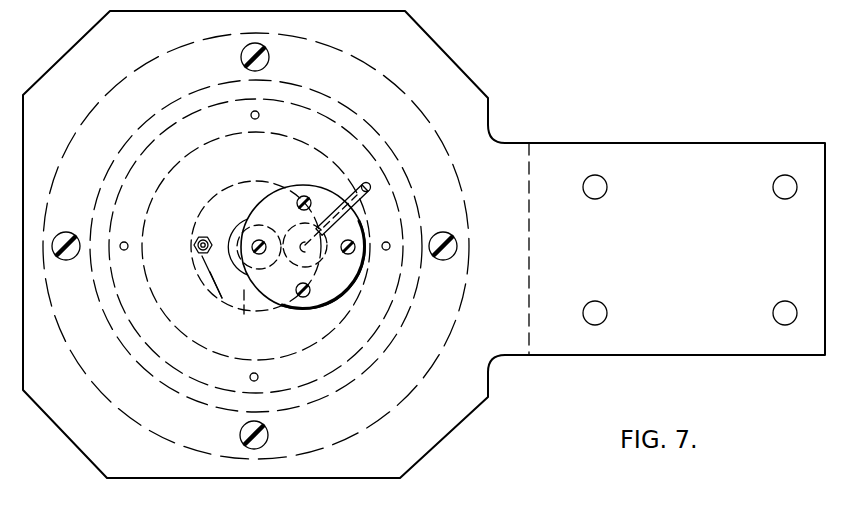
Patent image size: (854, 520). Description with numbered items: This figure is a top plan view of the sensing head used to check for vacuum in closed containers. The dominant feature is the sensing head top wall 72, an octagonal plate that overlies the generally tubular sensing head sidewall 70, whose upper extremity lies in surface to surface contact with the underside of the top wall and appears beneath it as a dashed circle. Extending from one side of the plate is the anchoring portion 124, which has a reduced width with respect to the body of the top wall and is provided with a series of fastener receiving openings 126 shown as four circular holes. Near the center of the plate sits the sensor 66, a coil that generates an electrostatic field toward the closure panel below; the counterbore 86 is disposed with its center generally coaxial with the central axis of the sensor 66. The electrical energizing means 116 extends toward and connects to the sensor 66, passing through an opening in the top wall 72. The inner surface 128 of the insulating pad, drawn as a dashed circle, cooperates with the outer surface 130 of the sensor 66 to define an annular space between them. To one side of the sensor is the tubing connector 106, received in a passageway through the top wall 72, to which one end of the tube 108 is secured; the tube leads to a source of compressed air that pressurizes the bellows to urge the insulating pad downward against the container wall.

The sensor 66 is at (245, 224).
The sensing head sidewall 70 is at (368, 67).
The sensing head top wall 72 is at (464, 72).
The counterbore 86 is at (246, 316).
The tubing connector 106 is at (198, 264).
The tube 108 is at (194, 241).
The electrical energizing means 116 is at (368, 189).
The anchoring portion 124 is at (687, 152).
The fastener receiving openings 126 is at (603, 193).
The inner surface of the pad 128 is at (221, 191).
The outer surface of the sensor 130 is at (222, 298).